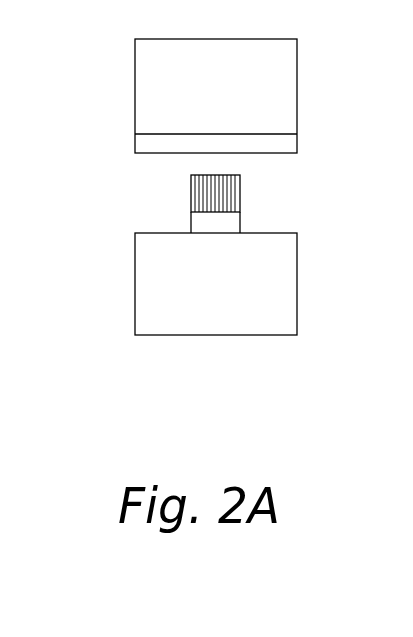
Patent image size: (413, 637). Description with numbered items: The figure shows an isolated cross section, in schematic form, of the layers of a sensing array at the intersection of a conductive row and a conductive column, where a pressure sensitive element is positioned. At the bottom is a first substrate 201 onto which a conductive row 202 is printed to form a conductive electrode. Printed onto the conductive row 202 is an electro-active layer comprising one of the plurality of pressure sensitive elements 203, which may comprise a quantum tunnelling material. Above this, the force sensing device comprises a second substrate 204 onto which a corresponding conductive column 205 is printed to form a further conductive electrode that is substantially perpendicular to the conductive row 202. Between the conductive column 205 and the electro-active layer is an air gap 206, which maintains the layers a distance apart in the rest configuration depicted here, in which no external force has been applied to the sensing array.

The first substrate 201 is at (292, 282).
The conductive row 202 is at (237, 222).
The pressure sensitive element 203 is at (238, 188).
The second substrate 204 is at (292, 78).
The conductive column 205 is at (292, 143).
The air gap 206 is at (145, 192).